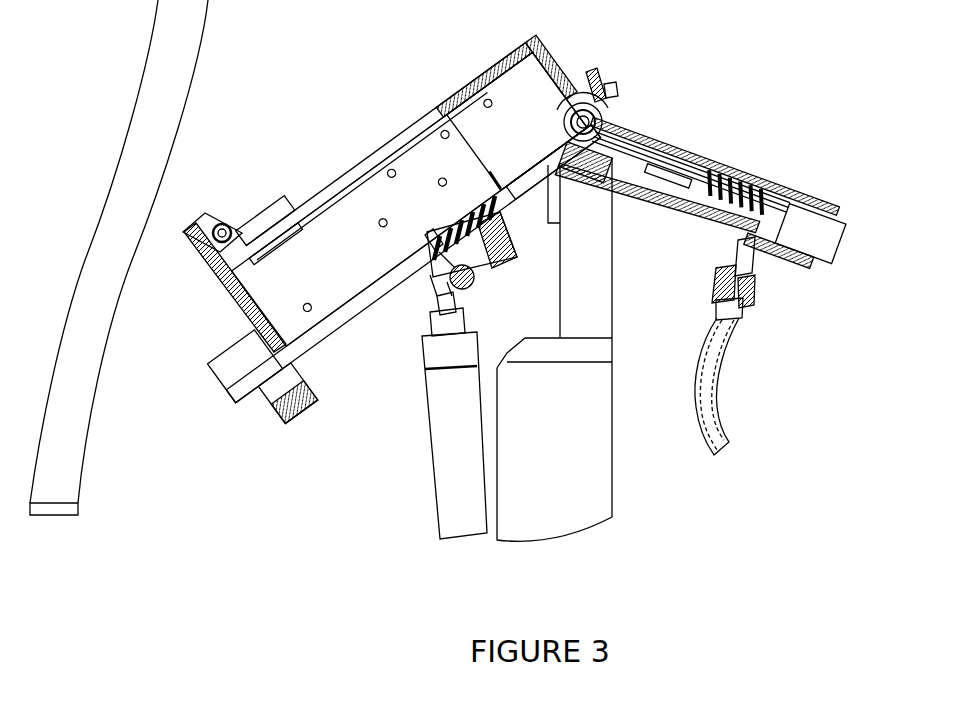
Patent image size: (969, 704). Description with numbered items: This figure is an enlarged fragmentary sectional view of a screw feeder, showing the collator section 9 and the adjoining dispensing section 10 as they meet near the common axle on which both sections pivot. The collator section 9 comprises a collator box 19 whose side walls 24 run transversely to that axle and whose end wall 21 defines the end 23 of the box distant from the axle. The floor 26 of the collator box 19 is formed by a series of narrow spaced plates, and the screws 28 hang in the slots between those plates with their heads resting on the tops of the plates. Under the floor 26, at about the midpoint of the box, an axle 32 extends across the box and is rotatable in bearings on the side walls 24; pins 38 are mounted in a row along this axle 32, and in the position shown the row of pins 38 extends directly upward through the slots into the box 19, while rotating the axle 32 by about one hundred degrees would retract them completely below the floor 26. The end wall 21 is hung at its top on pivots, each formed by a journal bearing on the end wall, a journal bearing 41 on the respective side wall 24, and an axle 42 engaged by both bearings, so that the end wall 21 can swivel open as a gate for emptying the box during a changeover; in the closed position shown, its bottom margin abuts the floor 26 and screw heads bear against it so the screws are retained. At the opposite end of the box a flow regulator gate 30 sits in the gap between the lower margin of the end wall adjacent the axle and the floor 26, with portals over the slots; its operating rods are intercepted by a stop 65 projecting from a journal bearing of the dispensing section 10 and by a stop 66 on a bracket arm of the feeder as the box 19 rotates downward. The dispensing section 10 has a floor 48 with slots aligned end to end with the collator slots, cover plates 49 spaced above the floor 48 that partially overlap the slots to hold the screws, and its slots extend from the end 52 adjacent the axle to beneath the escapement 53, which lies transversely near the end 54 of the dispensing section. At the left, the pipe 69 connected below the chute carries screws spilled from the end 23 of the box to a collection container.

The collator section 9 is at (323, 115).
The dispensing section 10 is at (748, 122).
The collator box 19 is at (502, 62).
The end wall 21 is at (249, 331).
The end 23 is at (212, 384).
The side walls 24 is at (348, 262).
The floor 26 is at (384, 300).
The screws 28 is at (452, 217).
The flow regulator gate 30 is at (554, 142).
The axle 32 is at (478, 287).
The pins 38 is at (424, 247).
The journal bearing 41 is at (270, 214).
The axle 42 is at (224, 224).
The floor 48 is at (683, 218).
The cover plates 49 is at (700, 156).
The end 52 is at (608, 130).
The escapement 53 is at (823, 196).
The end 54 is at (812, 265).
The stop 65 is at (601, 90).
The stop 66 is at (589, 86).
The pipe 69 is at (160, 160).